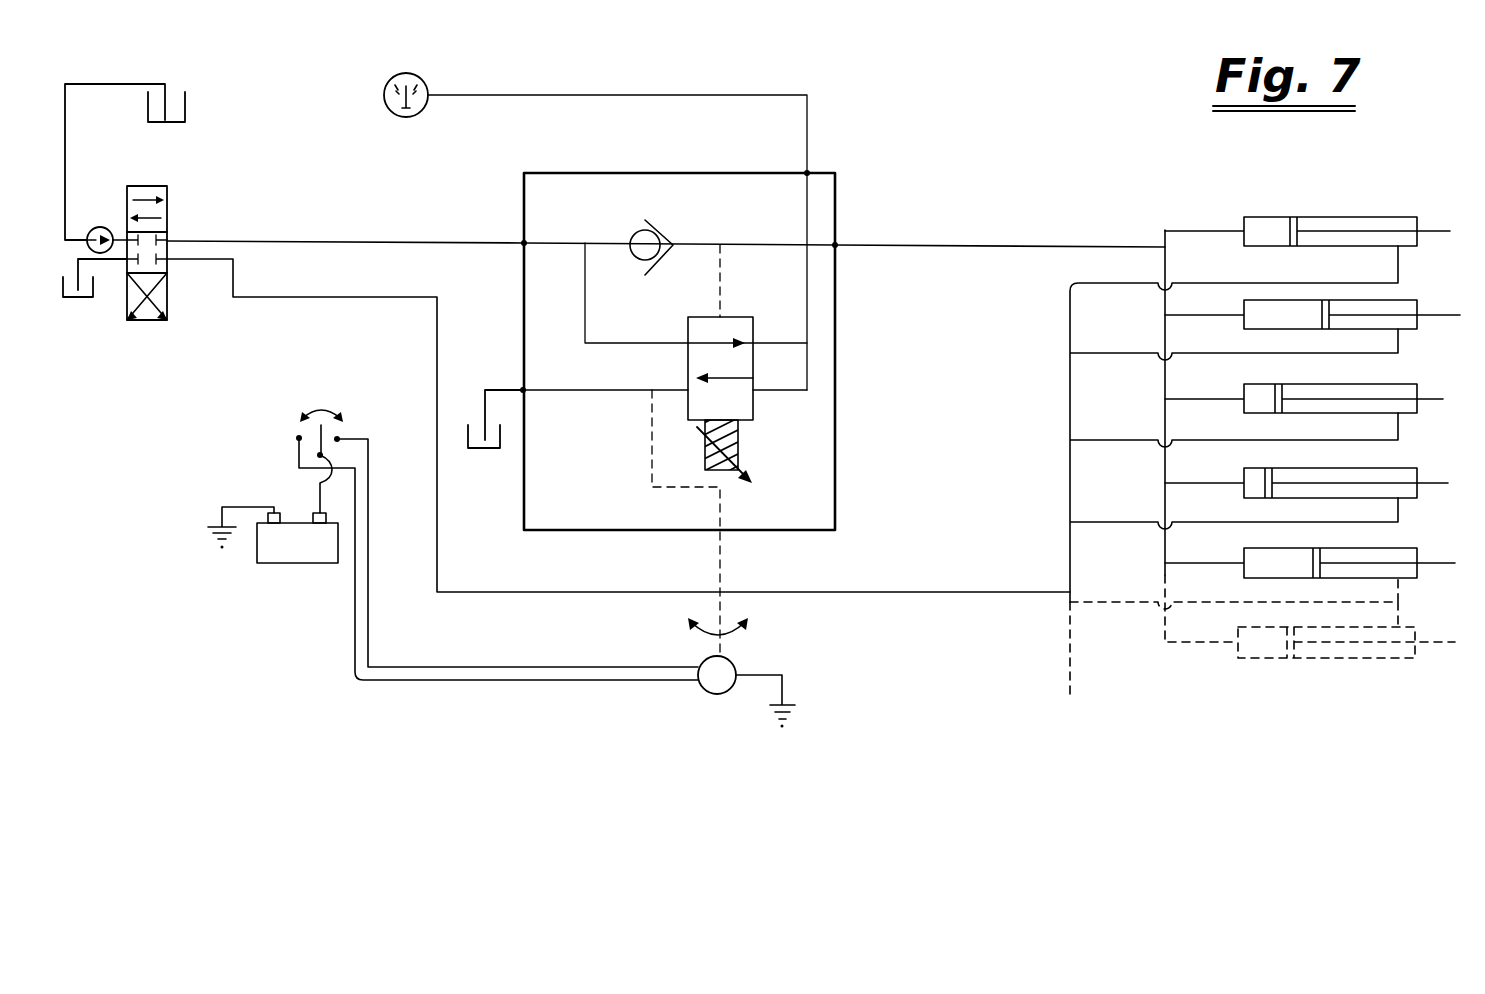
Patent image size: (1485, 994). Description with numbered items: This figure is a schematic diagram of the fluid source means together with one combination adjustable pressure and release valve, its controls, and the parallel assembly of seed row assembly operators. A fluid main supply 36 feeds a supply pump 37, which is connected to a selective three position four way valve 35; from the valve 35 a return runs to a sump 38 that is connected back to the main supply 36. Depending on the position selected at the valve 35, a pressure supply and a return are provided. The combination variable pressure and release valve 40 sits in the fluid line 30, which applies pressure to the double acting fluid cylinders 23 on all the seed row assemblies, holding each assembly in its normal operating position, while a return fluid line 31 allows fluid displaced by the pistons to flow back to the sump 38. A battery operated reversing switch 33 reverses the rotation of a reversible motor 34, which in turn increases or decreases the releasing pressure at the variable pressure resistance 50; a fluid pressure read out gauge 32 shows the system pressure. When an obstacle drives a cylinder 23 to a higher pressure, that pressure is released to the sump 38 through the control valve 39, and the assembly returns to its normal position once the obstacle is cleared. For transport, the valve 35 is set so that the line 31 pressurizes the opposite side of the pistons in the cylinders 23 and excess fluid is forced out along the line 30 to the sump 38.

The double acting fluid cylinders 23 is at (1407, 223).
The fluid line 30 is at (1007, 245).
The return fluid line 31 is at (943, 592).
The fluid pressure read out gauge 32 is at (415, 117).
The battery operated reversing switch 33 is at (315, 435).
The reversible motor 34 is at (707, 692).
The selective three position four way valve 35 is at (168, 203).
The fluid main supply 36 is at (185, 102).
The supply pump 37 is at (100, 227).
The sump 38 is at (77, 297).
The control valve 39 is at (697, 328).
The combination variable pressure and release valve 40 is at (880, 183).
The variable pressure resistance 50 is at (740, 437).